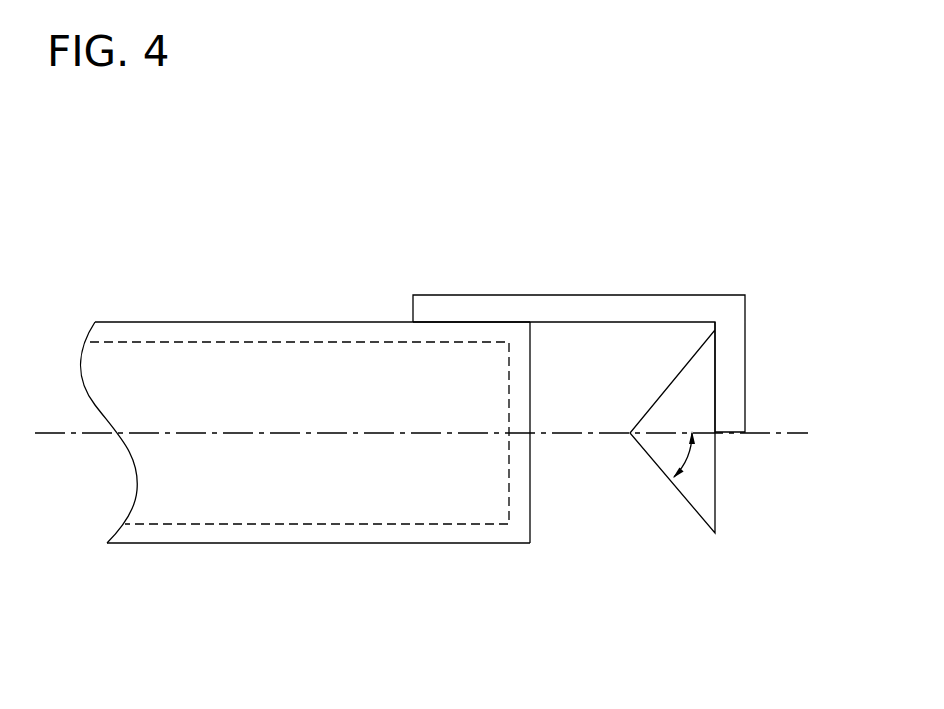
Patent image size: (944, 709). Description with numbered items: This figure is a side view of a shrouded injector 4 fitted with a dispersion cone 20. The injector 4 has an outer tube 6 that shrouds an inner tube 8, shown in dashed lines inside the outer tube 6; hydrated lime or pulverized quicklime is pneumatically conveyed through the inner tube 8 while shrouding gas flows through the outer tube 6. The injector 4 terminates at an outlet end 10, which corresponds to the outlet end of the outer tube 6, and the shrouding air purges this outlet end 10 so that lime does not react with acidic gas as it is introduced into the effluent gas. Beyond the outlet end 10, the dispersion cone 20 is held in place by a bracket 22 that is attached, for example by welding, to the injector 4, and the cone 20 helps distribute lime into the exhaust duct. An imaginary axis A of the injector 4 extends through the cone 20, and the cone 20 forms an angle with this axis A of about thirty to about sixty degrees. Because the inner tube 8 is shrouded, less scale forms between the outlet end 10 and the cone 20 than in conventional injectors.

The shrouded injector 4 is at (323, 297).
The outer tube 6 is at (218, 322).
The inner tube 8 is at (295, 524).
The outlet end 10 is at (530, 527).
The dispersion cone 20 is at (685, 502).
The bracket 22 is at (658, 295).
The imaginary axis A is at (430, 433).